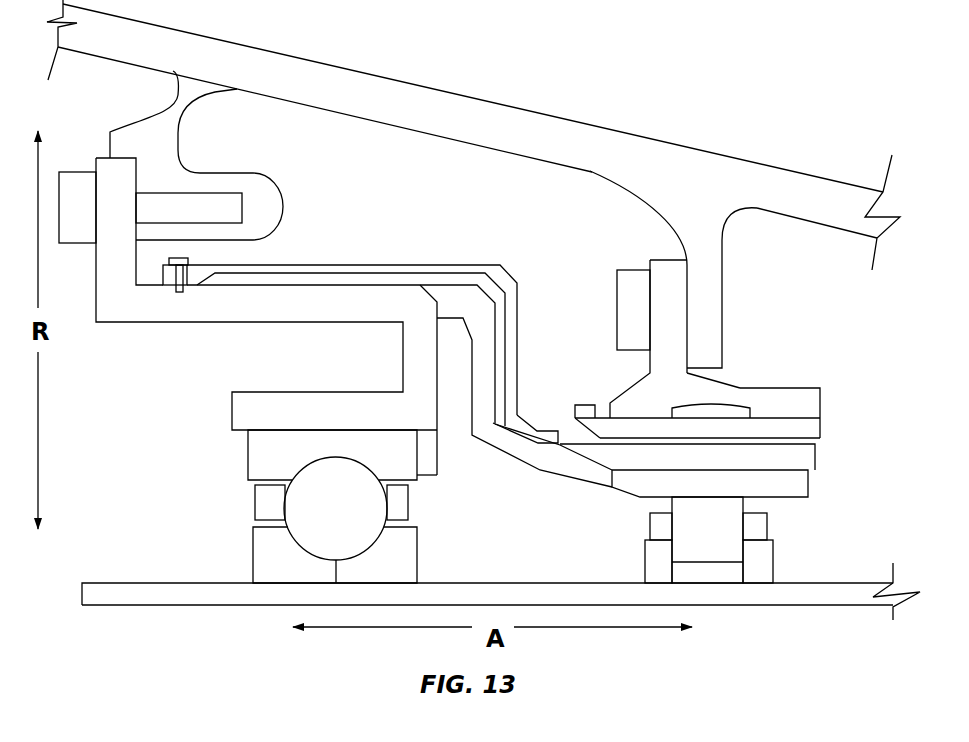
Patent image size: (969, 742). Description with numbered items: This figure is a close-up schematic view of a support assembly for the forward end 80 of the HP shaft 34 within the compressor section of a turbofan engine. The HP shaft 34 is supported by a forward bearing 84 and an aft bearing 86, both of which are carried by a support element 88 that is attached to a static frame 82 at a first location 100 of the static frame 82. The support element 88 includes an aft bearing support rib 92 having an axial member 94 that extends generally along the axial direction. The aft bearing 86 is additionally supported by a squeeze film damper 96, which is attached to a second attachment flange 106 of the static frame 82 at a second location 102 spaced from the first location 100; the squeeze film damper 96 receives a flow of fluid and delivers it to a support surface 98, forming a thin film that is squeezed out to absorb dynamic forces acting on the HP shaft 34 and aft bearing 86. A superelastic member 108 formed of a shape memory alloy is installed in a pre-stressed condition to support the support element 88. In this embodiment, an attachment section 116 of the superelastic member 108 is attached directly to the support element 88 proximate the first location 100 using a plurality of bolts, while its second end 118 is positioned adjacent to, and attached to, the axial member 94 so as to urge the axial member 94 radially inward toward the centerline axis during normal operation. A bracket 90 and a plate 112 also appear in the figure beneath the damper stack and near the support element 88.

The HP shaft 34 is at (795, 598).
The forward end 80 is at (162, 624).
The static frame 82 is at (547, 112).
The forward bearing 84 is at (246, 508).
The aft bearing 86 is at (798, 570).
The support element 88 is at (354, 214).
The bracket 90 is at (365, 390).
The aft bearing support rib 92 is at (473, 330).
The axial member 94 is at (587, 472).
The squeeze film damper 96 is at (763, 398).
The support surface 98 is at (762, 446).
The first location 100 is at (208, 116).
The second location 102 is at (786, 246).
The second attachment flange 106 is at (712, 270).
The superelastic member 108 is at (469, 252).
The mounting plate 112 is at (728, 456).
The attachment section 116 is at (216, 262).
The second end 118 is at (537, 421).